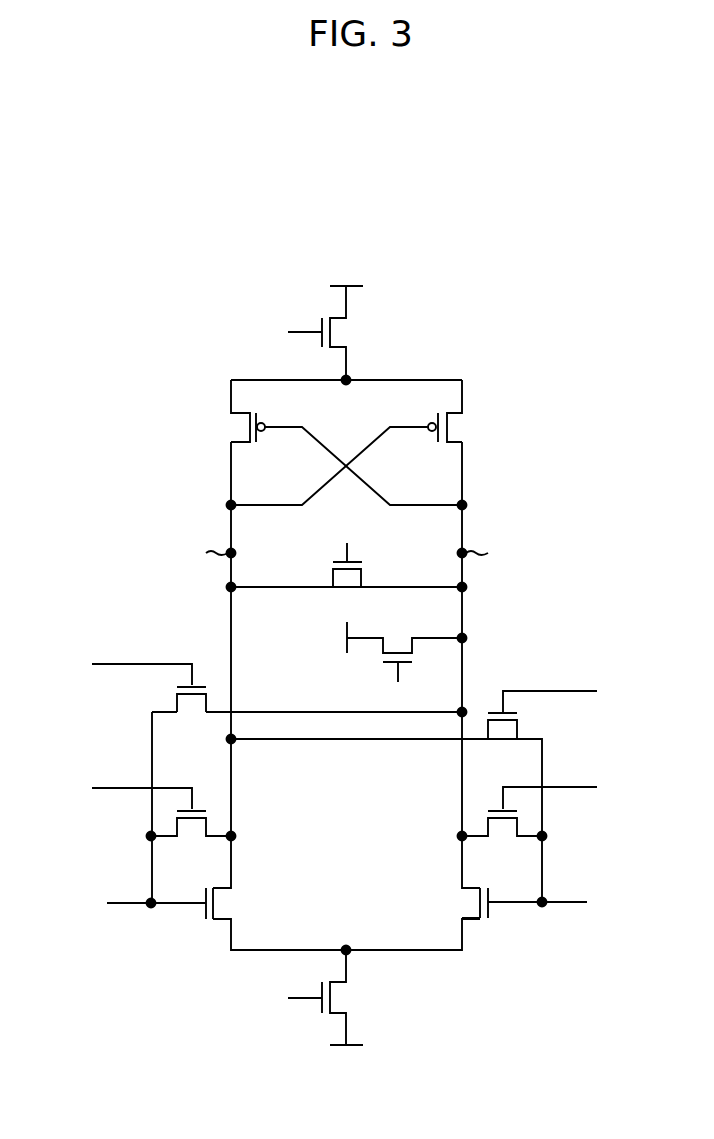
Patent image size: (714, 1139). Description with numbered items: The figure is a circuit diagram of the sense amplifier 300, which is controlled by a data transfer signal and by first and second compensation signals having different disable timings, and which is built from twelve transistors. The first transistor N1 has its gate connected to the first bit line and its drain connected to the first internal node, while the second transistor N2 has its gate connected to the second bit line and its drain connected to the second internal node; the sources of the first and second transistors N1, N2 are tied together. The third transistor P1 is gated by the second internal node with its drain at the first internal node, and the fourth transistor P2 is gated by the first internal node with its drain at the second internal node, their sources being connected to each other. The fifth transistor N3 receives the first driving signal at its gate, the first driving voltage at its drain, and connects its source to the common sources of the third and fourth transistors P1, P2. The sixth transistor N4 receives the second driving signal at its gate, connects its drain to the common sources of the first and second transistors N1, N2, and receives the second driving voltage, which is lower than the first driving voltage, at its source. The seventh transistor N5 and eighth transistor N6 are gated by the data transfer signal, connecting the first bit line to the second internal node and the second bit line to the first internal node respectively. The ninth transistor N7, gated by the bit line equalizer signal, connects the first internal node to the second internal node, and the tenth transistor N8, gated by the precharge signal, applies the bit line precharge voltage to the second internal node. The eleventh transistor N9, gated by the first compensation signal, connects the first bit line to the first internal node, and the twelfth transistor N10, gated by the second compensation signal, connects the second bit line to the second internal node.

The sense amplifier 300 is at (565, 243).
The fifth transistor N3 is at (309, 318).
The third transistor P1 is at (338, 442).
The fourth transistor P2 is at (359, 442).
The ninth transistor N7 is at (346, 563).
The tenth transistor N8 is at (379, 659).
The seventh transistor N5 is at (129, 696).
The eighth transistor N6 is at (562, 722).
The eleventh transistor N9 is at (139, 817).
The twelfth transistor N10 is at (552, 818).
The first transistor N1 is at (162, 902).
The second transistor N2 is at (533, 903).
The sixth transistor N4 is at (308, 1012).